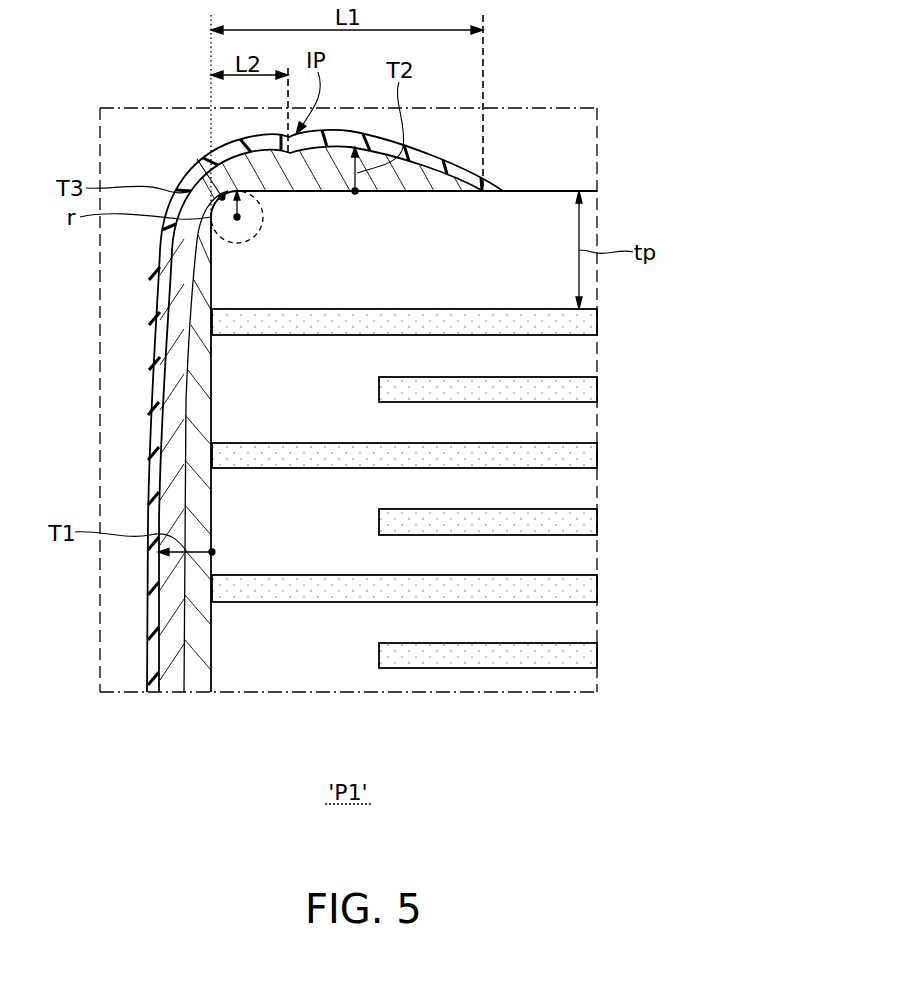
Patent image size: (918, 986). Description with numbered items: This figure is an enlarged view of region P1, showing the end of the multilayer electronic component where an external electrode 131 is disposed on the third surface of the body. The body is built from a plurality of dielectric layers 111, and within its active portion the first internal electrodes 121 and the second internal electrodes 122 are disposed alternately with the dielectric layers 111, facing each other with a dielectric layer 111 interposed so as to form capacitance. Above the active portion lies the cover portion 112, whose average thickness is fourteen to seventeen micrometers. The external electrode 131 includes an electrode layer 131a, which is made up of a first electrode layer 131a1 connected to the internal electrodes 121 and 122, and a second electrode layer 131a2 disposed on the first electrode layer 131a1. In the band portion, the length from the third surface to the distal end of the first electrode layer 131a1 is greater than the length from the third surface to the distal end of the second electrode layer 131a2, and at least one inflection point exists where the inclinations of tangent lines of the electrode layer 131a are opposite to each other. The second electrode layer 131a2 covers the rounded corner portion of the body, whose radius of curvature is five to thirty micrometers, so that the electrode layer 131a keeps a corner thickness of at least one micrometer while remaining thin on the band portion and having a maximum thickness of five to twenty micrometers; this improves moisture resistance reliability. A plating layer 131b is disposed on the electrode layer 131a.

The dielectric layer 111 is at (581, 358).
The cover portion 112 is at (543, 225).
The first internal electrode 121 is at (578, 325).
The second internal electrode 122 is at (578, 390).
The external electrode 131 is at (302, 484).
The electrode layer 131a is at (330, 460).
The first electrode layer 131a1 is at (196, 676).
The second electrode layer 131a2 is at (171, 686).
The plating layer 131b is at (155, 674).